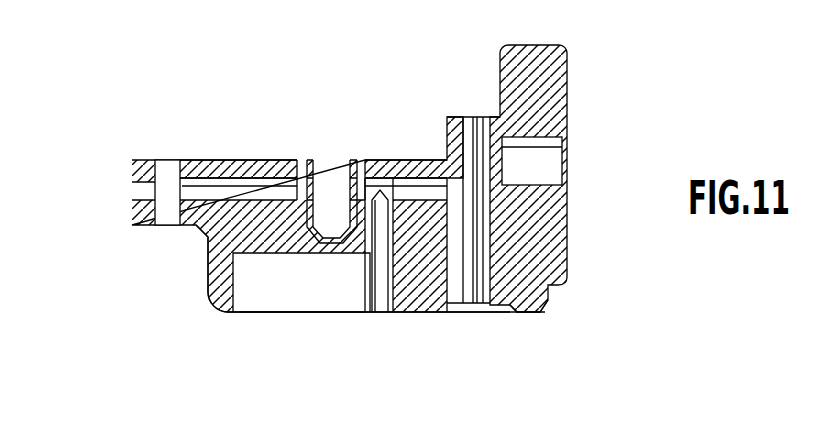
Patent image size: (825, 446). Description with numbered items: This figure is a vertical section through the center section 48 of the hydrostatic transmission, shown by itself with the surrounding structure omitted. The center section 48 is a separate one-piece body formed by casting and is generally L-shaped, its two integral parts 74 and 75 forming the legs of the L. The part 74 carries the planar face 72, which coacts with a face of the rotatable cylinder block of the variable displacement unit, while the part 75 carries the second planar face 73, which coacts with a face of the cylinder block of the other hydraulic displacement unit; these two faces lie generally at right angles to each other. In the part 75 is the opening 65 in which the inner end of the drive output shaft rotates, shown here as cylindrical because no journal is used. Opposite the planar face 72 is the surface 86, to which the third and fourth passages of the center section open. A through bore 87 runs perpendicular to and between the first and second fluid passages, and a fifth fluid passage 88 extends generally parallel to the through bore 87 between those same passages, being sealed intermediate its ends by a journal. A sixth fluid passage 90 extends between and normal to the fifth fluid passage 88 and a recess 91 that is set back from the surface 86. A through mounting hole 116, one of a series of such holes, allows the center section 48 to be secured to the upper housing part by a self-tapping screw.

The center section 48 is at (623, 281).
The opening 65 is at (567, 160).
The planar face 72 is at (253, 160).
The second planar face 73 is at (570, 86).
The integral part 74 is at (207, 253).
The integral part 75 is at (570, 243).
The surface 86 is at (540, 316).
The through bore 87 is at (470, 117).
The fifth fluid passage 88 is at (220, 160).
The sixth fluid passage 90 is at (382, 305).
The recess 91 is at (237, 283).
The through mounting hole 116 is at (167, 160).